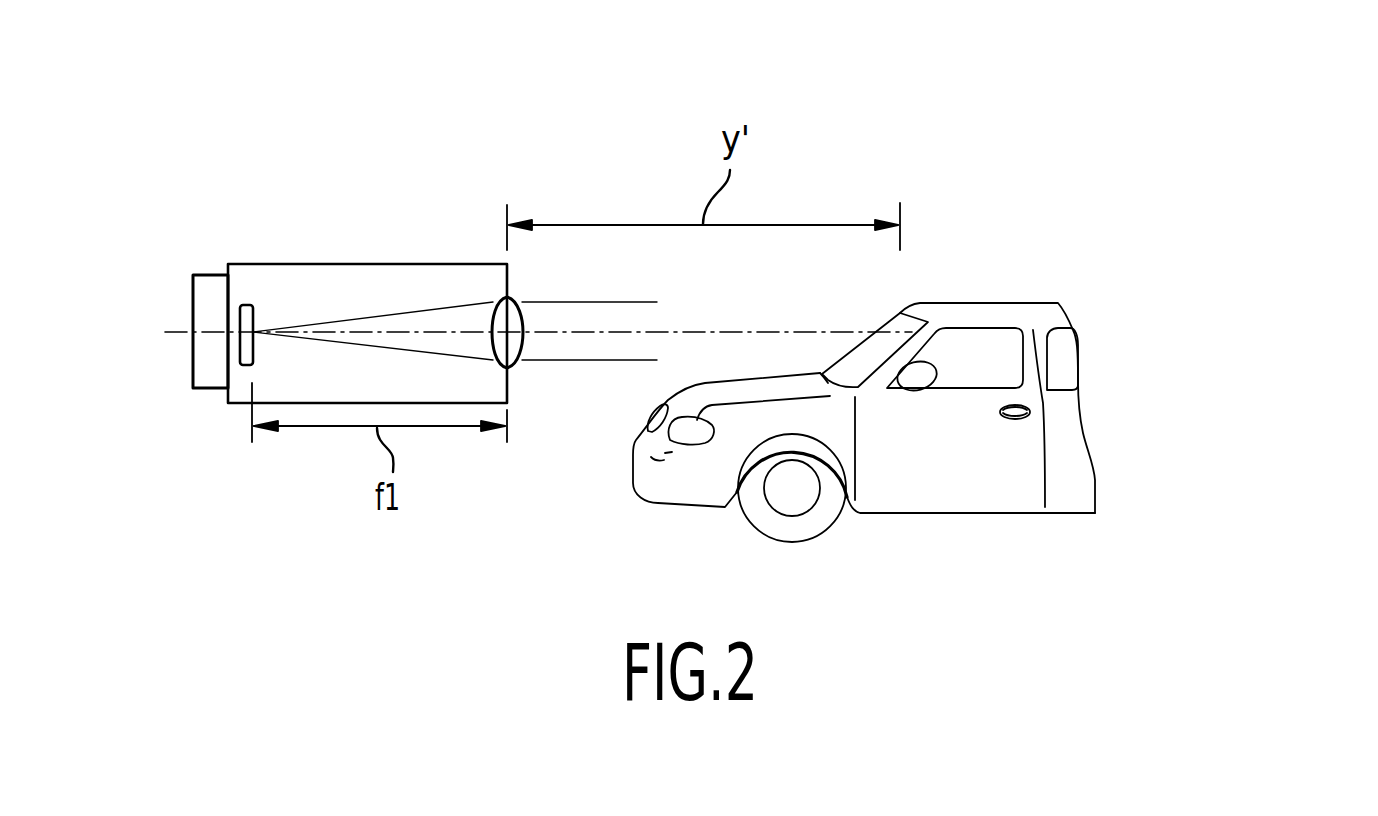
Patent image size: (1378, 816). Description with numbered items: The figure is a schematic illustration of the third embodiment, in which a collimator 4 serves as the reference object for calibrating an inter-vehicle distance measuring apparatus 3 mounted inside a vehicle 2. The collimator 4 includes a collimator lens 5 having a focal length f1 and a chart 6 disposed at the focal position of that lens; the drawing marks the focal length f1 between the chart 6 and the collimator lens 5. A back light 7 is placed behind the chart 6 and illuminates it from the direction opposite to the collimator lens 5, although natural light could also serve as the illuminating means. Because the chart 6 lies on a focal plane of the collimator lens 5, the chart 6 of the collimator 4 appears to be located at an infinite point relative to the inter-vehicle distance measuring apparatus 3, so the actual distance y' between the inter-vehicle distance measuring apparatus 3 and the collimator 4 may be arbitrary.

The vehicle 2 is at (930, 485).
The inter-vehicle distance measuring apparatus 3 is at (902, 327).
The collimator 4 is at (363, 264).
The collimator lens 5 is at (510, 320).
The chart 6 is at (280, 264).
The back light 7 is at (212, 275).